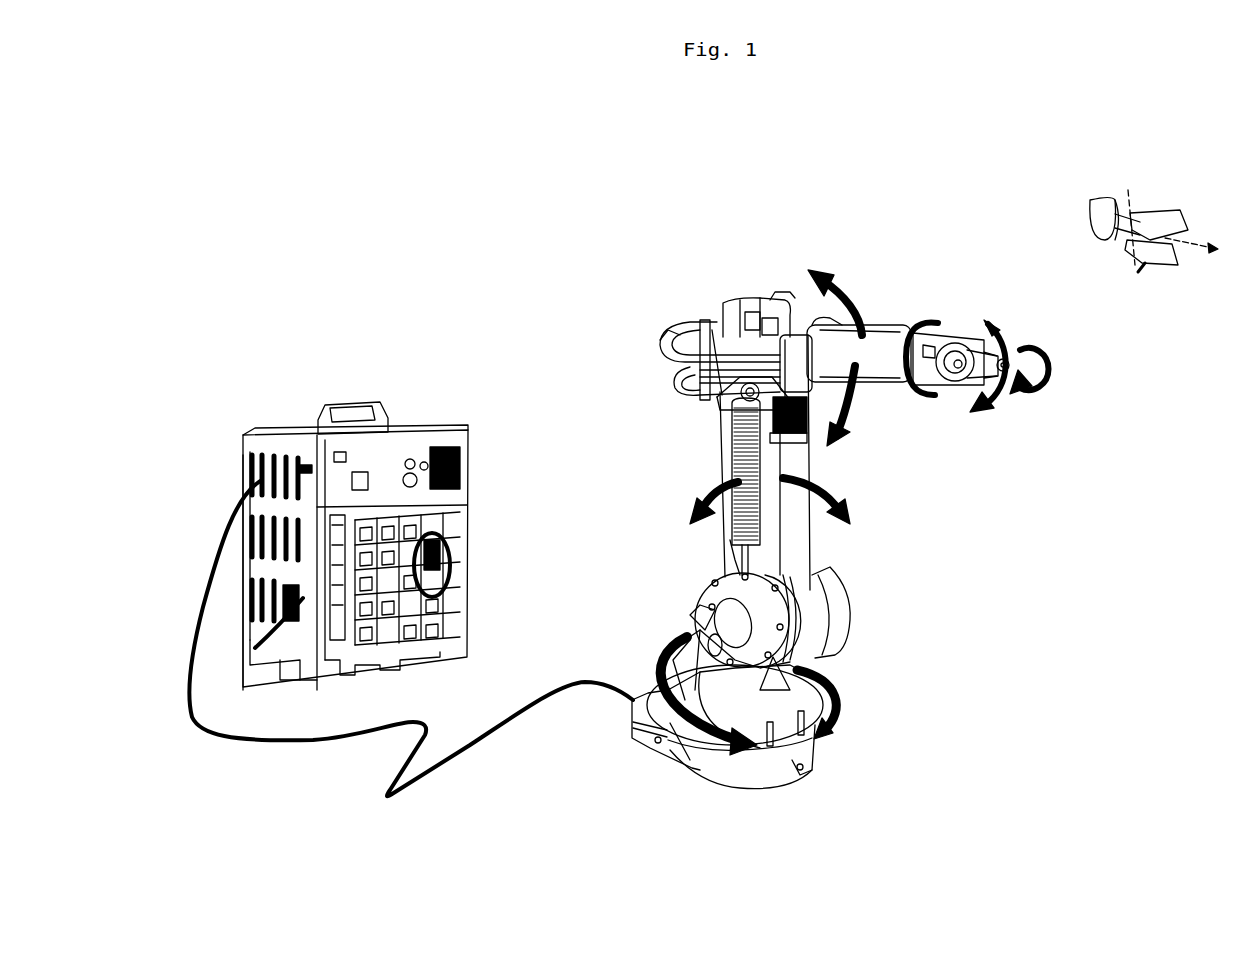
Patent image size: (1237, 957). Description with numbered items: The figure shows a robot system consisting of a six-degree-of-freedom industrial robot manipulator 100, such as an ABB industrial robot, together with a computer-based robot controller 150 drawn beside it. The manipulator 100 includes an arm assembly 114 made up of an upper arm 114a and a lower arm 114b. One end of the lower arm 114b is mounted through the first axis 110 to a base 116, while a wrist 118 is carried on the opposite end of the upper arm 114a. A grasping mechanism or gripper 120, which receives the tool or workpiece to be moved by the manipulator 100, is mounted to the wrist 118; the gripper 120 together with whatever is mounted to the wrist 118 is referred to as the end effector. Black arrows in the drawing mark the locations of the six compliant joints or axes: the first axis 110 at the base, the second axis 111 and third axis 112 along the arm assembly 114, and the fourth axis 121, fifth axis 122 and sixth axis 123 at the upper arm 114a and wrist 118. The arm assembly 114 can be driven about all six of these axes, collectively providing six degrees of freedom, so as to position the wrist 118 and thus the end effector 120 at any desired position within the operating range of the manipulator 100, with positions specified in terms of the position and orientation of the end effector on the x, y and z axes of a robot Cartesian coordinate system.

The robot manipulator 100 is at (854, 440).
The axis 1 110 is at (804, 696).
The axis 2 111 is at (694, 501).
The axis 3 112 is at (798, 338).
The arm assembly 114 is at (646, 351).
The upper arm 114a is at (873, 358).
The lower arm 114b is at (798, 545).
The base 116 is at (770, 773).
The wrist 118 is at (985, 335).
The gripper 120 is at (1018, 330).
The axis 4 121 is at (917, 317).
The axis 5 122 is at (1003, 403).
The axis 6 123 is at (1052, 370).
The robot controller 150 is at (411, 561).